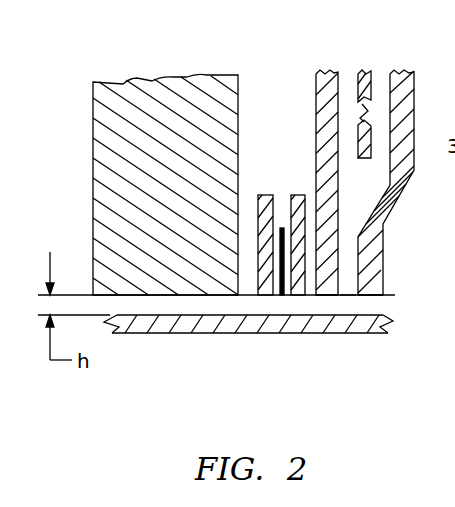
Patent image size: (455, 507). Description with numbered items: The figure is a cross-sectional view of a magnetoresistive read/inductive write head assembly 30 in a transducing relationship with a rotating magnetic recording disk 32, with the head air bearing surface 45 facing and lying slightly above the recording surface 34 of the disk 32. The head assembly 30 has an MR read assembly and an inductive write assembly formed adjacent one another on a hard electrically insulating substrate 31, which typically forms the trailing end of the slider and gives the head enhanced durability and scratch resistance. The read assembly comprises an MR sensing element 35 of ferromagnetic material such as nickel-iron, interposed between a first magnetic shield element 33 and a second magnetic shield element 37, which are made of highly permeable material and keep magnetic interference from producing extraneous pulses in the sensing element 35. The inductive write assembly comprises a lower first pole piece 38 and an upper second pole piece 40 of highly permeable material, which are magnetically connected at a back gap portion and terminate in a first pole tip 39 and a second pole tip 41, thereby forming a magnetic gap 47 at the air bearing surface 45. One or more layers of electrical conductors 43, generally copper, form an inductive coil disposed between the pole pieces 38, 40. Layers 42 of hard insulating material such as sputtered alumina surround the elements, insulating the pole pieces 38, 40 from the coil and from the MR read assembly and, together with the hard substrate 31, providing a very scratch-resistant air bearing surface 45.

The MR read/write head assembly 30 is at (84, 162).
The hard electrically insulating substrate 31 is at (136, 202).
The rotating magnetic recording disk 32 is at (269, 340).
The first magnetic shield element 33 is at (267, 297).
The recording surface 34 is at (186, 330).
The MR sensing element 35 is at (287, 296).
The second magnetic shield element 37 is at (300, 296).
The first pole piece 38 is at (316, 143).
The first pole tip 39 is at (331, 296).
The second pole piece 40 is at (404, 191).
The second pole tip 41 is at (384, 268).
The layers of hard insulating material 42 is at (325, 196).
The electrical conductors 43 is at (375, 114).
The air bearing surface 45 is at (383, 294).
The magnetic gap 47 is at (347, 286).